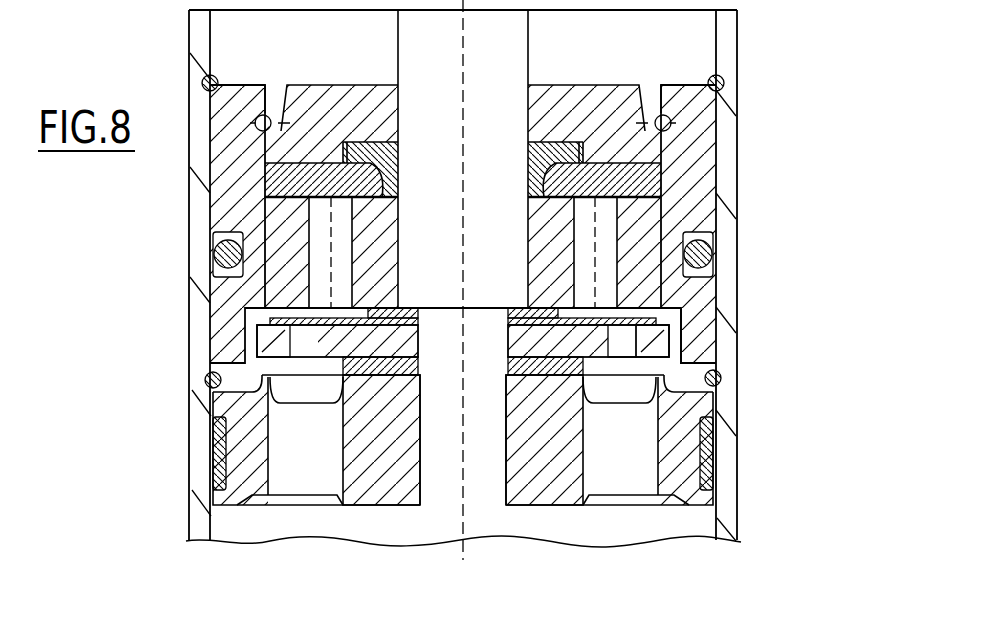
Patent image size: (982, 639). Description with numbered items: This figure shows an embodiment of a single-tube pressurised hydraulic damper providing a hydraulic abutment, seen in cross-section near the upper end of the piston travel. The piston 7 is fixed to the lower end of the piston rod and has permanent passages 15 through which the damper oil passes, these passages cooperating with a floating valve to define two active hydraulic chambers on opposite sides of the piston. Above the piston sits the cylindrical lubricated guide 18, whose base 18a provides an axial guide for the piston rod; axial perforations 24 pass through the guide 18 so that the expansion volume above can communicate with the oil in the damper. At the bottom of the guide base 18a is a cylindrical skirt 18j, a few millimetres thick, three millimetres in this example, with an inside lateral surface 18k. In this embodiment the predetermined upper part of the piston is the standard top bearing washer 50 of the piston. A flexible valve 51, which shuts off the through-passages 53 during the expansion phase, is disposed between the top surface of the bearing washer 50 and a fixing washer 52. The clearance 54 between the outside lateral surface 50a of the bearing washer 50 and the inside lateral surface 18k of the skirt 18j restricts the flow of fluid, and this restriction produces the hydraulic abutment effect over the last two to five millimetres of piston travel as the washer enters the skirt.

The piston 7 is at (549, 450).
The permanent passages 15 is at (306, 462).
The cylindrical lubricated guide 18 is at (672, 208).
The base 18a is at (642, 250).
The cylindrical skirt 18j is at (697, 322).
The inside lateral surface 18k is at (242, 328).
The axial perforations 24 is at (325, 232).
The top bearing washer 50 is at (558, 338).
The outside lateral surface 50a is at (263, 345).
The flexible valve 51 is at (628, 318).
The fixing washer 52 is at (402, 311).
The through-passages 53 is at (620, 338).
The clearance 54 is at (677, 338).